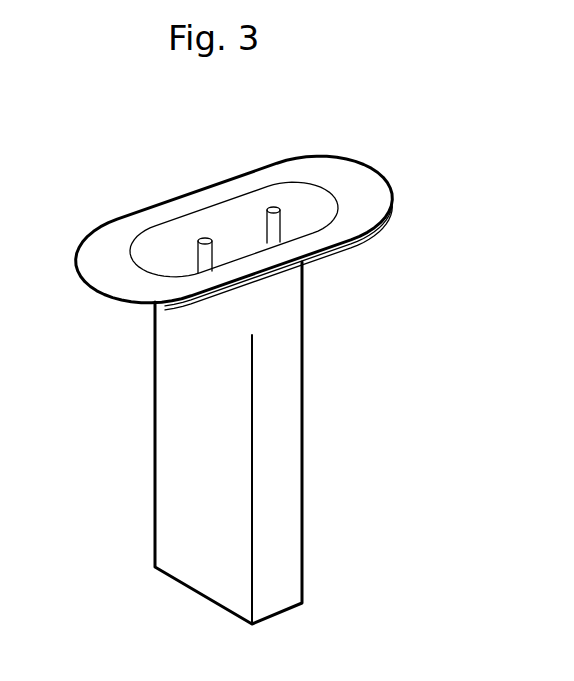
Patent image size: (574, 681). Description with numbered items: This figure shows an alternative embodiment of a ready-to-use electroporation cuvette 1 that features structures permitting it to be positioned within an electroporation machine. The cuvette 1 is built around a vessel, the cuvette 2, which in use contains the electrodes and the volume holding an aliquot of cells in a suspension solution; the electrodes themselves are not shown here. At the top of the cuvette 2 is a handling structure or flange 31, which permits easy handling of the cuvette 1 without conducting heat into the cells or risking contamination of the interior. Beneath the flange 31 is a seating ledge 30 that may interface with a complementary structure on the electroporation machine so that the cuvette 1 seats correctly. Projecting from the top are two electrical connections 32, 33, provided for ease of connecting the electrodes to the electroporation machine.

The ready-to-use electroporation cuvette 1 is at (348, 391).
The cuvette 2 is at (303, 502).
The seating ledge 30 is at (356, 247).
The flange 31 is at (389, 197).
The electrical connection 32 is at (272, 207).
The electrical connection 33 is at (204, 238).